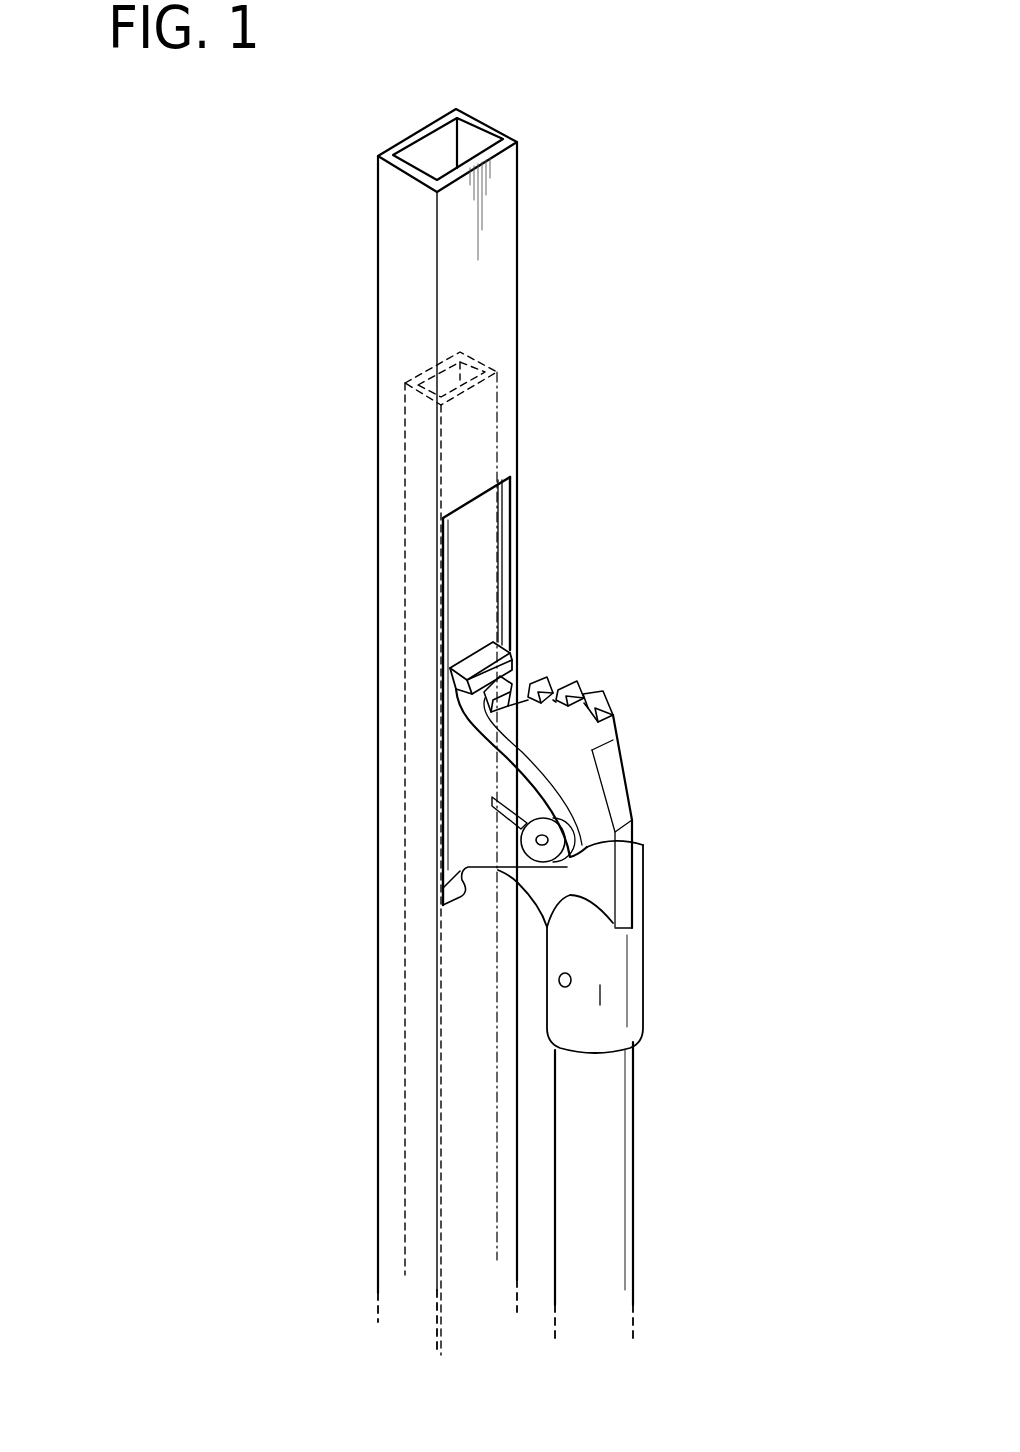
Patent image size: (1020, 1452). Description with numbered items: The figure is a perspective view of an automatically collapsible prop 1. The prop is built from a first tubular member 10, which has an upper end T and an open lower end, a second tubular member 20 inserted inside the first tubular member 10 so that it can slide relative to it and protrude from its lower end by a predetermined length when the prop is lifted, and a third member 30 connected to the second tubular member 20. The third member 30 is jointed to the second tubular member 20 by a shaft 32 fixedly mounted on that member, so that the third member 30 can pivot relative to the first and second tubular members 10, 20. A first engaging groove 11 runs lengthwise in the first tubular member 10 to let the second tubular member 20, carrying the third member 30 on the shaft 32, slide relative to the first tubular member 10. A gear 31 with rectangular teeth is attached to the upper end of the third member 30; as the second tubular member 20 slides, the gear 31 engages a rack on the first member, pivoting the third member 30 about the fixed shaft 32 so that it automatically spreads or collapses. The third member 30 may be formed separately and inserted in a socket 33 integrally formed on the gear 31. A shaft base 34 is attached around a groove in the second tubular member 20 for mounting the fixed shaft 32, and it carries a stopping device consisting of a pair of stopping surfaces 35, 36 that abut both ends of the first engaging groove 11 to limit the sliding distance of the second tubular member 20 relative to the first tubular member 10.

The automatically collapsible prop 1 is at (325, 441).
The upper end T is at (405, 136).
The first tubular member 10 is at (517, 268).
The first engaging groove 11 is at (472, 502).
The second tubular member 20 is at (468, 430).
The third member 30 is at (633, 1175).
The gear 31 is at (607, 765).
The shaft 32 is at (549, 843).
The socket 33 is at (633, 977).
The shaft base 34 is at (470, 796).
The stopping surface 35 is at (477, 665).
The stopping surface 36 is at (443, 903).